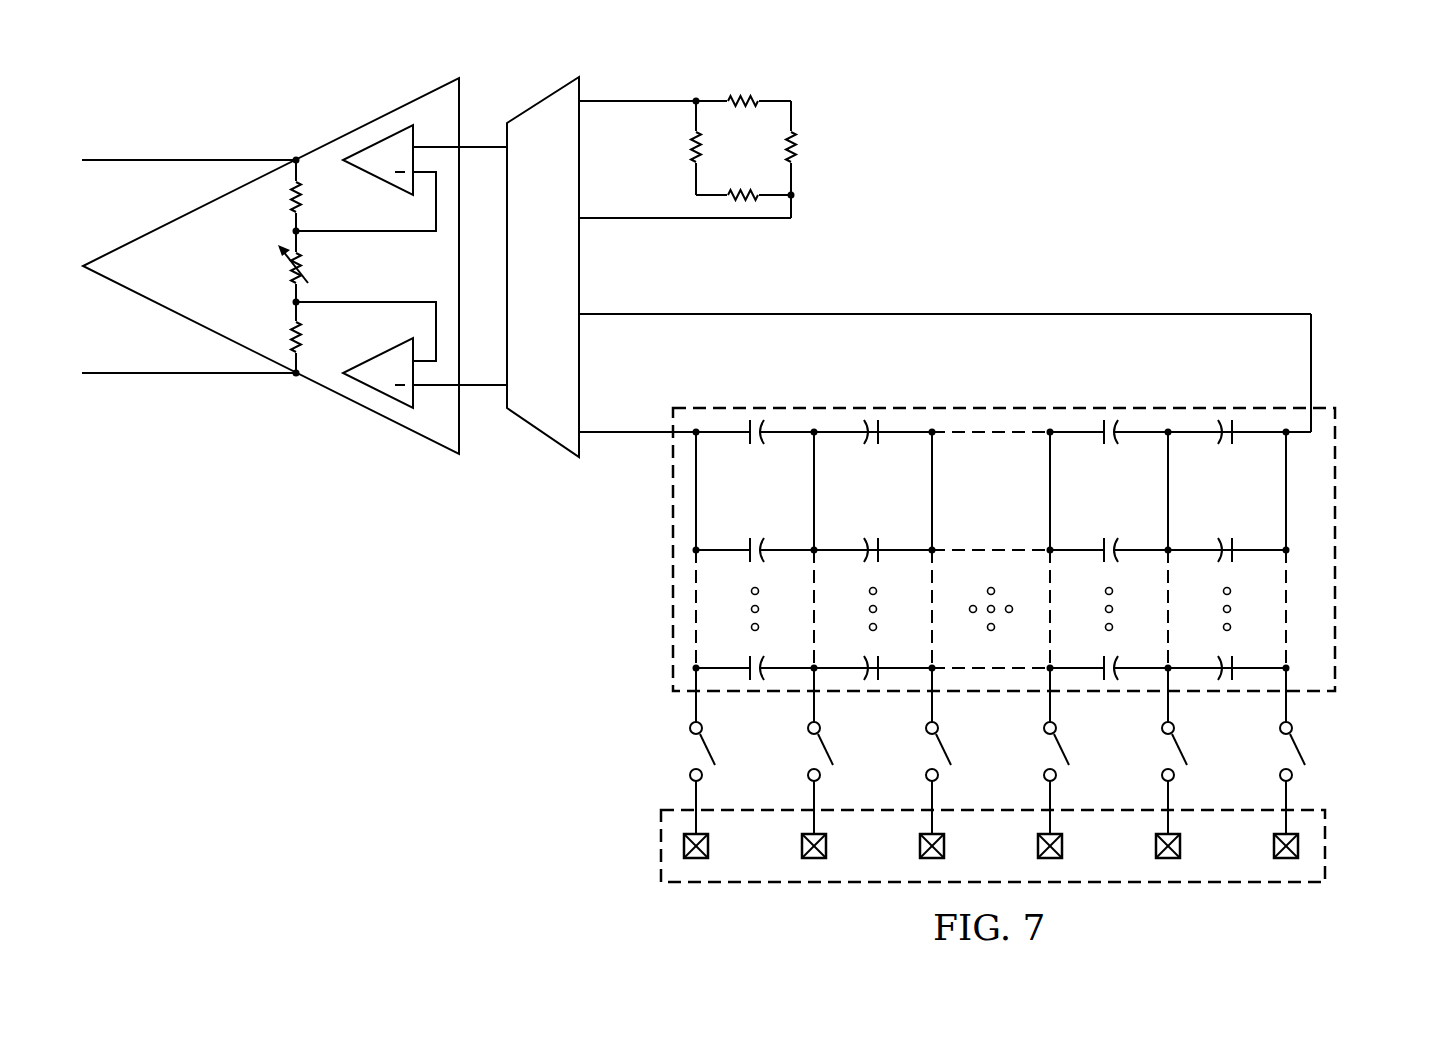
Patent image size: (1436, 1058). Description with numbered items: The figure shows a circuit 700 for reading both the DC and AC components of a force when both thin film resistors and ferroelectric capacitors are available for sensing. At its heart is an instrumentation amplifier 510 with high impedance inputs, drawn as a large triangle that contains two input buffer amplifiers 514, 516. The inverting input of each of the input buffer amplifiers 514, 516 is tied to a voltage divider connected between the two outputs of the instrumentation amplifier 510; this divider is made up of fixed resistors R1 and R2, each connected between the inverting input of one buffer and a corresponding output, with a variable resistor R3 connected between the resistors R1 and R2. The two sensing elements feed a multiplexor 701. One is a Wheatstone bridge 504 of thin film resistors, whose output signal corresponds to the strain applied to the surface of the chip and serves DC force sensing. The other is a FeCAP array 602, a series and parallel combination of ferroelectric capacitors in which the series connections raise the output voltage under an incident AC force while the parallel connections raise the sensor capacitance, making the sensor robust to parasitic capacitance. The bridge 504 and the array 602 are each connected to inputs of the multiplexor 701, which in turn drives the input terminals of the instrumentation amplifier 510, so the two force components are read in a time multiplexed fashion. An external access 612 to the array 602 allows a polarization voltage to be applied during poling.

The circuit 700 is at (1197, 110).
The instrumentation amplifier 510 is at (373, 115).
The input buffer amplifier 514 is at (372, 173).
The input buffer amplifier 516 is at (372, 362).
The multiplexor 701 is at (565, 298).
The Wheatstone bridge 504 is at (811, 92).
The FeCAP array 602 is at (1343, 582).
The external access 612 is at (1194, 888).
The fixed resistor R1 is at (277, 197).
The fixed resistor R2 is at (277, 337).
The variable resistor R3 is at (280, 264).